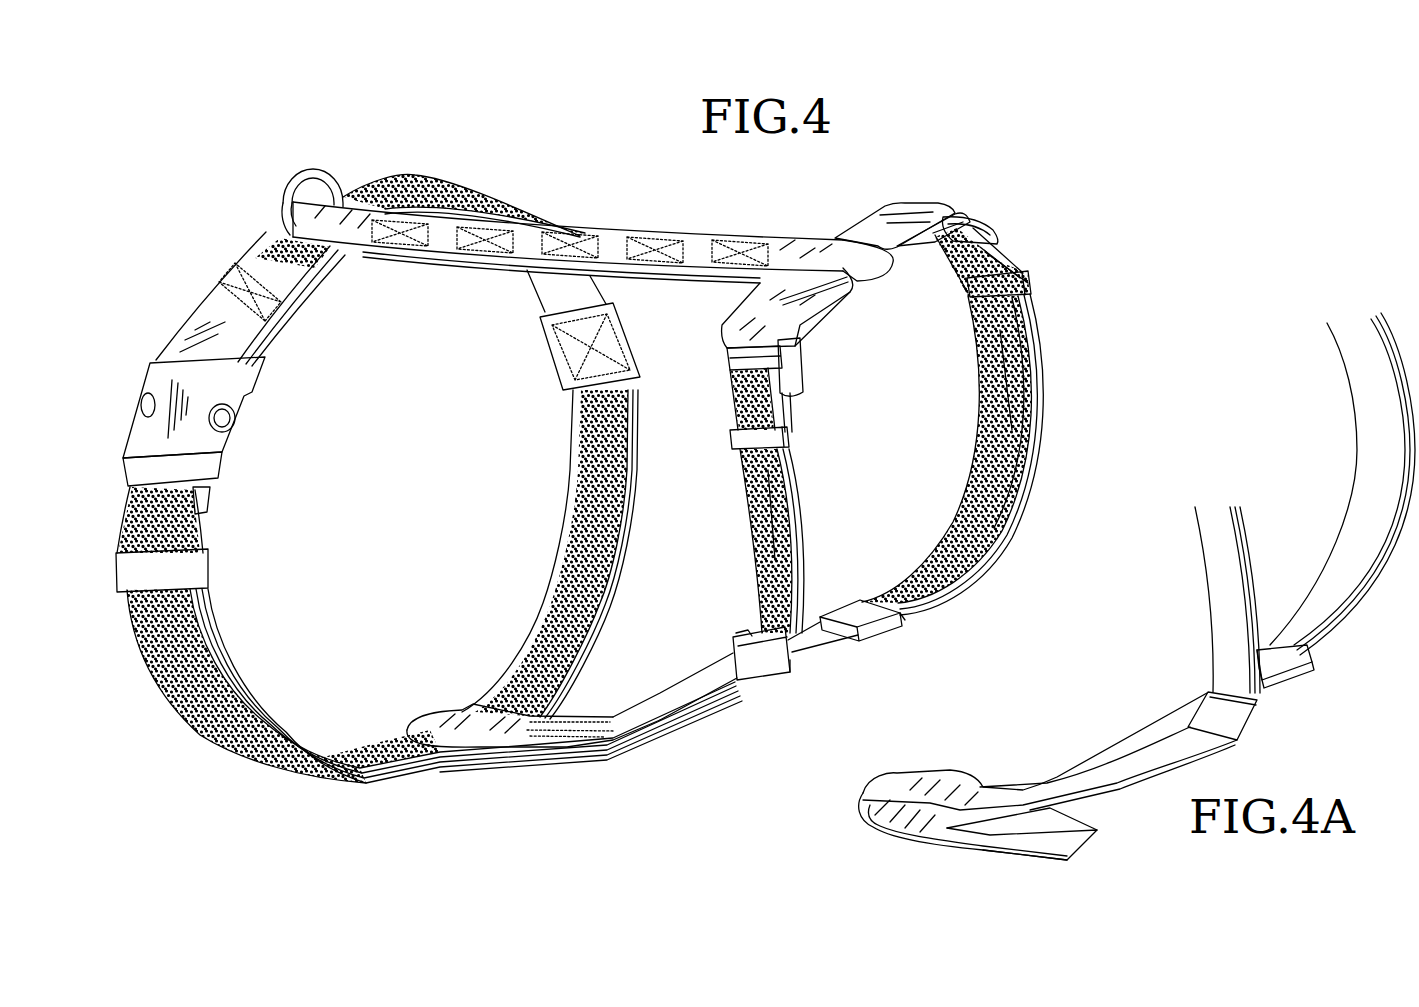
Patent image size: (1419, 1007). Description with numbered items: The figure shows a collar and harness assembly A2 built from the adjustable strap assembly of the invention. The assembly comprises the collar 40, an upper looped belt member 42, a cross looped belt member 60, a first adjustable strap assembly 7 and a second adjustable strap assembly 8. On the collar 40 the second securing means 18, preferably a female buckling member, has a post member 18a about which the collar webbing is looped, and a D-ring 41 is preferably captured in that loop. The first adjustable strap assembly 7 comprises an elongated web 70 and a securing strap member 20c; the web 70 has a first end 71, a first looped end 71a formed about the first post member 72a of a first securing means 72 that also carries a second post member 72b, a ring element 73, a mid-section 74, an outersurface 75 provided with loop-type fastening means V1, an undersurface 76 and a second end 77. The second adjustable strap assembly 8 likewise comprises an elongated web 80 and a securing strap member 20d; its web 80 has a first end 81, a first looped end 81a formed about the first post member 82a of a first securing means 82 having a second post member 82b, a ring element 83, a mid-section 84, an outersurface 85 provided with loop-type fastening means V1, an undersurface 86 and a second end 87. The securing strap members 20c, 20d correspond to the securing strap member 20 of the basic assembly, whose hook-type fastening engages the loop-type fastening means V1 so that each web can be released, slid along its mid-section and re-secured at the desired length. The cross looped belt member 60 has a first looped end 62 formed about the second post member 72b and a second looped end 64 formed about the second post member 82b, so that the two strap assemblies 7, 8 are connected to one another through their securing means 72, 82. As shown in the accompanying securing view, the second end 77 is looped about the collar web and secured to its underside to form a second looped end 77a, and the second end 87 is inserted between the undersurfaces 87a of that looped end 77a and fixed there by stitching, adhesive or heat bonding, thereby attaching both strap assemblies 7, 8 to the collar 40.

In FIG. 4, the collar and harness assembly A2 is at (553, 132).
In FIG. 4, the D-ring 41 is at (290, 190).
In FIG. 4, the upper looped belt member 42 is at (600, 225).
In FIG. 4, the second securing means 18 is at (300, 300).
In FIG. 4, the post member 18a is at (268, 332).
In FIG. 4, the collar 40 is at (146, 729).
In FIG. 4, the second adjustable strap assembly 8 is at (1036, 452).
In FIG. 4, the elongated web 80 is at (1045, 338).
In FIG. 4, the outersurface 85 is at (1022, 405).
In FIG. 4, the loop-type fastening means V1 is at (1022, 340).
In FIG. 4, the securing strap member 20 is at (545, 350).
In FIG. 4, the cross looped belt member 60 is at (875, 225).
In FIG. 4, the second looped end 64 is at (913, 208).
In FIG. 4, the first looped end 62 is at (717, 320).
In FIG. 4, the first securing means 72 is at (725, 355).
In FIG. 4, the first post member 72a is at (720, 405).
In FIG. 4, the second post member 72b is at (800, 328).
In FIG. 4, the first end 71 is at (750, 610).
In FIG. 4, the first looped end 71a is at (808, 400).
In FIG. 4, the ring element 73 is at (800, 426).
In FIG. 4, the outersurface 75 is at (740, 476).
In FIG. 4, the elongated web 70 is at (752, 520).
In FIG. 4, the first adjustable strap assembly 7 is at (796, 528).
In FIG. 4, the mid-section 74 is at (745, 637).
In FIG. 4, the undersurface 86 is at (682, 682).
In FIG. 4, the undersurface 76 is at (650, 726).
In FIG. 4, the second looped end 77a is at (430, 720).
In FIG. 4A, the second looped end 77a is at (882, 782).
In FIG. 4, the stitching 87a is at (530, 737).
In FIG. 4, the mid-section 84 is at (918, 617).
In FIG. 4, the first end 81 is at (900, 622).
In FIG. 4, the first looped end 81a is at (1005, 252).
In FIG. 4, the first securing means 82 is at (975, 222).
In FIG. 4, the first post member 82a is at (1000, 235).
In FIG. 4, the second post member 82b is at (950, 207).
In FIG. 4, the ring element 83 is at (1030, 281).
In FIG. 4, the securing strap member 20c is at (800, 656).
In FIG. 4A, the securing strap member 20c is at (1257, 706).
In FIG. 4, the securing strap member 20d is at (915, 640).
In FIG. 4A, the securing strap member 20d is at (1300, 665).
In FIG. 4A, the second end 87 is at (945, 820).
In FIG. 4A, the second end 77 is at (1100, 850).